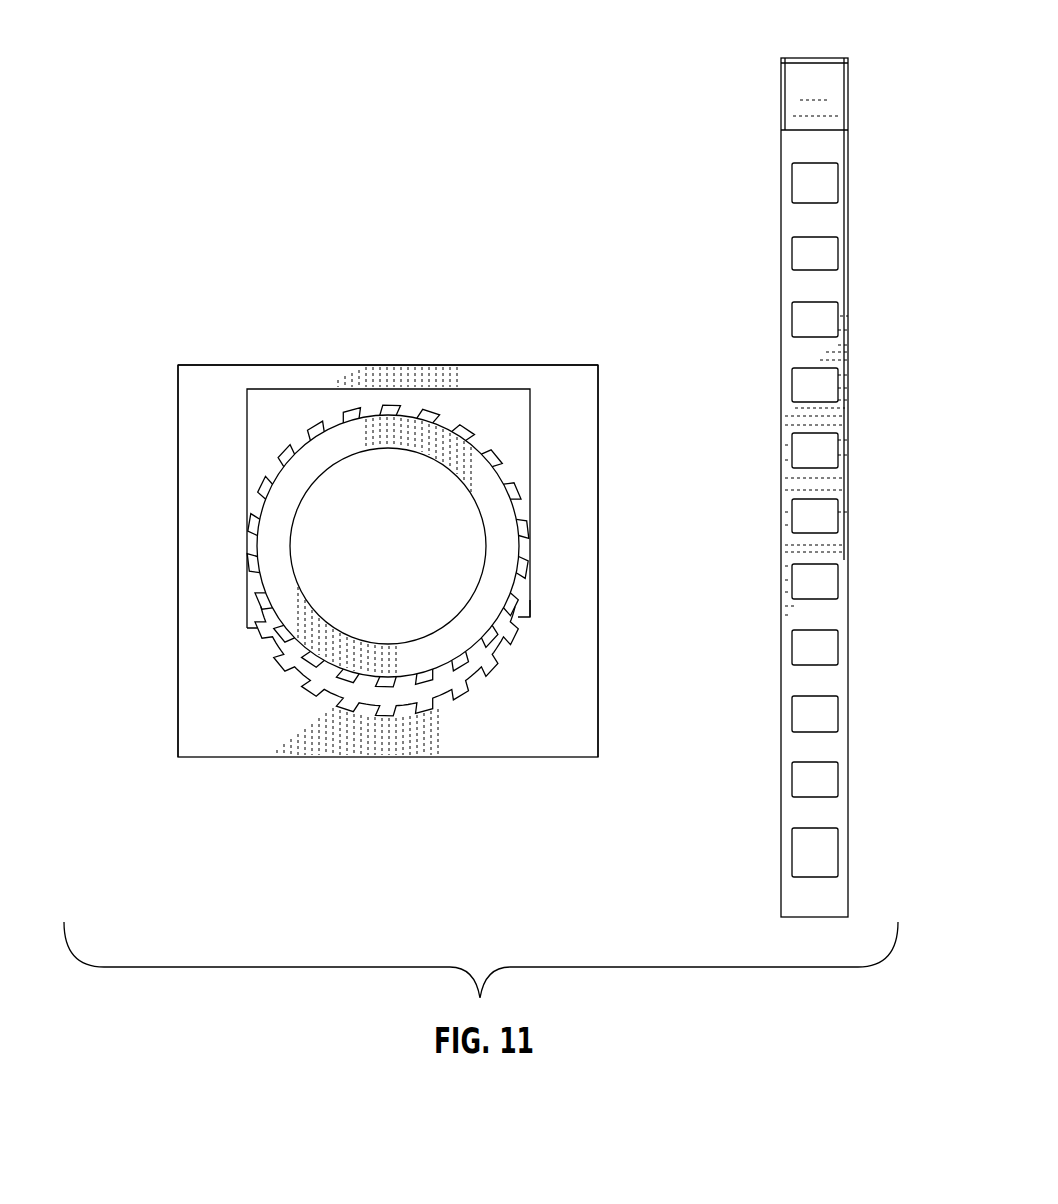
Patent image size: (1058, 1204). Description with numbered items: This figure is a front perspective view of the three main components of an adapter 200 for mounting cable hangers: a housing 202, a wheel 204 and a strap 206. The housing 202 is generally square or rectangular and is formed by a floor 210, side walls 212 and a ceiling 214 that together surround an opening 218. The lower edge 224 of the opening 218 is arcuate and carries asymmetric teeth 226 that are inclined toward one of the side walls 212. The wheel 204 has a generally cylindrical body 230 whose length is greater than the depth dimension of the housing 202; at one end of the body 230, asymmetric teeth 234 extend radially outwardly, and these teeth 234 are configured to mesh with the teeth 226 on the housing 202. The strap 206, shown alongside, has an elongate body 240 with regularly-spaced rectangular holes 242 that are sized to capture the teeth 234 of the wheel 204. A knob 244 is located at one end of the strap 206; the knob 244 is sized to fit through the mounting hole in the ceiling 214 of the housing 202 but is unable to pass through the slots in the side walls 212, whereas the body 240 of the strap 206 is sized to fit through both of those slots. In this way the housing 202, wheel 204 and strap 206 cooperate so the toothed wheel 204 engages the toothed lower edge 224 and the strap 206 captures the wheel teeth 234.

The adapter 200 is at (632, 321).
The housing 202 is at (364, 590).
The wheel 204 is at (298, 402).
The strap 206 is at (858, 468).
The floor 210 is at (263, 757).
The side walls 212 is at (178, 690).
The ceiling 214 is at (490, 373).
The opening 218 is at (328, 623).
The lower edge 224 is at (433, 695).
The asymmetric teeth 226 is at (445, 697).
The cylindrical body 230 is at (277, 552).
The asymmetric teeth 234 is at (520, 598).
The elongate body 240 is at (828, 485).
The rectangular holes 242 is at (815, 517).
The knob 244 is at (827, 88).